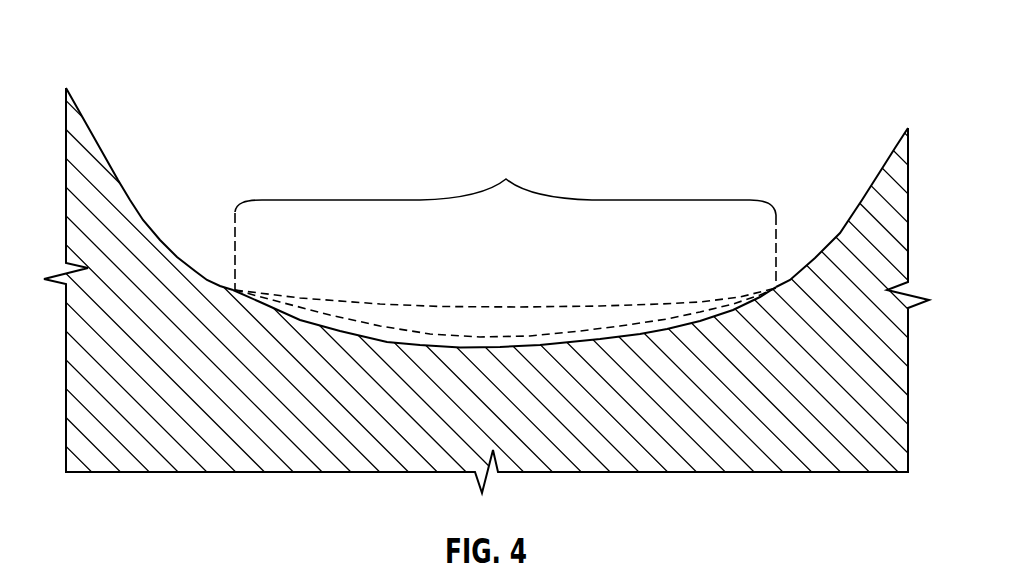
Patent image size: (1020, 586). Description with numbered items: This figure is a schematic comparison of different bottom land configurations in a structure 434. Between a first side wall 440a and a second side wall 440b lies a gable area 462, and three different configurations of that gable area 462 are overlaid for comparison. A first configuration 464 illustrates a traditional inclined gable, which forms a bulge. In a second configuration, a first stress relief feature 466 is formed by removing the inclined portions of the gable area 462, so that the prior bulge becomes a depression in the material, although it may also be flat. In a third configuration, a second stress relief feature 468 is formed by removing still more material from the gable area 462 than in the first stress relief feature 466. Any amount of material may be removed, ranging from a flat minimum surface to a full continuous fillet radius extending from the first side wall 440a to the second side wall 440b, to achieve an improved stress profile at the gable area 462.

The structure 434 is at (163, 60).
The first side wall 440a is at (112, 162).
The second side wall 440b is at (886, 166).
The gable area 462 is at (505, 220).
The first configuration 464 is at (513, 304).
The first stress relief feature 466 is at (433, 334).
The second stress relief feature 468 is at (560, 345).